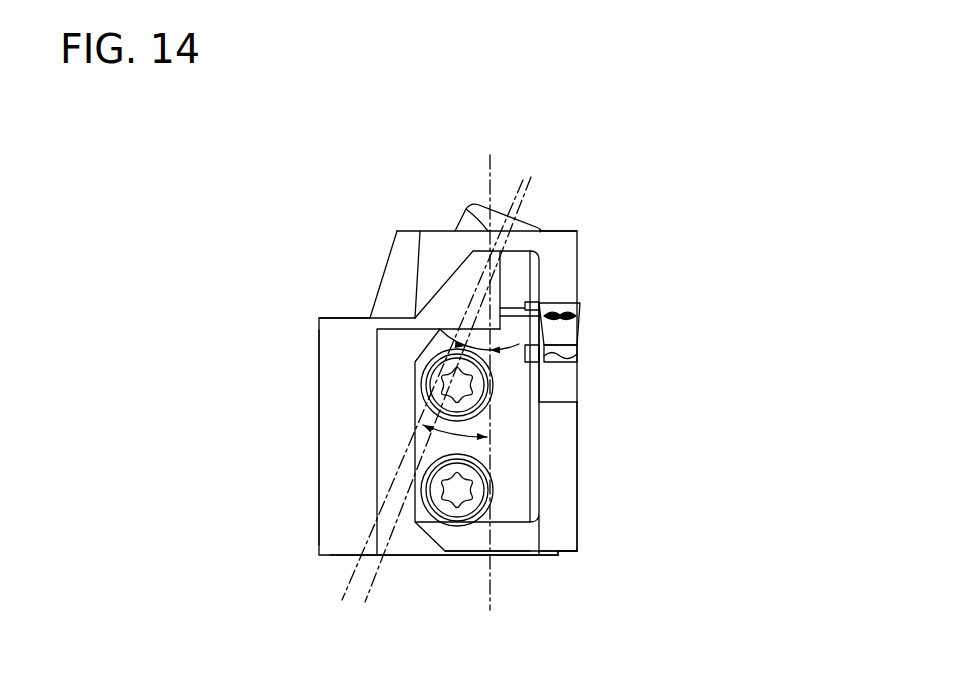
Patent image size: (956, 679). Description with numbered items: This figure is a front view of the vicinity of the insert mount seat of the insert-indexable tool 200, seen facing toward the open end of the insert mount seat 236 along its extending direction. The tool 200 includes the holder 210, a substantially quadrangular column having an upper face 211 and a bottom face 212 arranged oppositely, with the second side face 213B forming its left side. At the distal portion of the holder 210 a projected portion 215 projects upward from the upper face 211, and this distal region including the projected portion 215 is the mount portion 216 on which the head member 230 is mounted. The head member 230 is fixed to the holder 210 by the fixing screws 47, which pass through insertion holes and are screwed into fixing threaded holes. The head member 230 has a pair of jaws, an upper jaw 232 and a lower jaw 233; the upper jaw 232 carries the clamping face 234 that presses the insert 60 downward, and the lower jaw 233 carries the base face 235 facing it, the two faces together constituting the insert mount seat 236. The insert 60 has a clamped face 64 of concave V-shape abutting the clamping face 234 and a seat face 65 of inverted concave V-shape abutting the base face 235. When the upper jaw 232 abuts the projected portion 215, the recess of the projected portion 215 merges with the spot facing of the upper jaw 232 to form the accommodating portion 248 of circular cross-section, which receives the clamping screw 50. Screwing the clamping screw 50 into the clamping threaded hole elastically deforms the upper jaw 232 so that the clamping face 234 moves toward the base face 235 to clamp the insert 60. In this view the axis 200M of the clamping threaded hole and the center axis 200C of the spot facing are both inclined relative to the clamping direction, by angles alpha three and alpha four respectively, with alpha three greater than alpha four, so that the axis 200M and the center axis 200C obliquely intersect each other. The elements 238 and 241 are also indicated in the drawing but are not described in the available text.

The insert-indexable tool 200 is at (702, 205).
The holder 210 is at (272, 183).
The upper face 211 is at (338, 320).
The bottom face 212 is at (507, 556).
The second side face 213B is at (319, 455).
The projected portion 215 is at (395, 258).
The mount portion 216 is at (313, 282).
The head member 230 is at (574, 562).
The upper jaw 232 is at (570, 240).
The lower jaw 233 is at (566, 390).
The clamping face 234 is at (580, 322).
The base face 235 is at (578, 348).
The insert mount seat 236 is at (641, 380).
The insert seat 238 is at (517, 508).
The side wall 241 is at (572, 490).
The accommodating portion 248 is at (415, 190).
The fixing screw 47 is at (445, 380).
The clamping screw 50 is at (469, 199).
The insert 60 is at (641, 333).
The clamped face 64 is at (563, 304).
The seat face 65 is at (567, 378).
The axis of the clamping threaded hole 200M is at (348, 563).
The center axis of the spot facing 200C is at (373, 572).